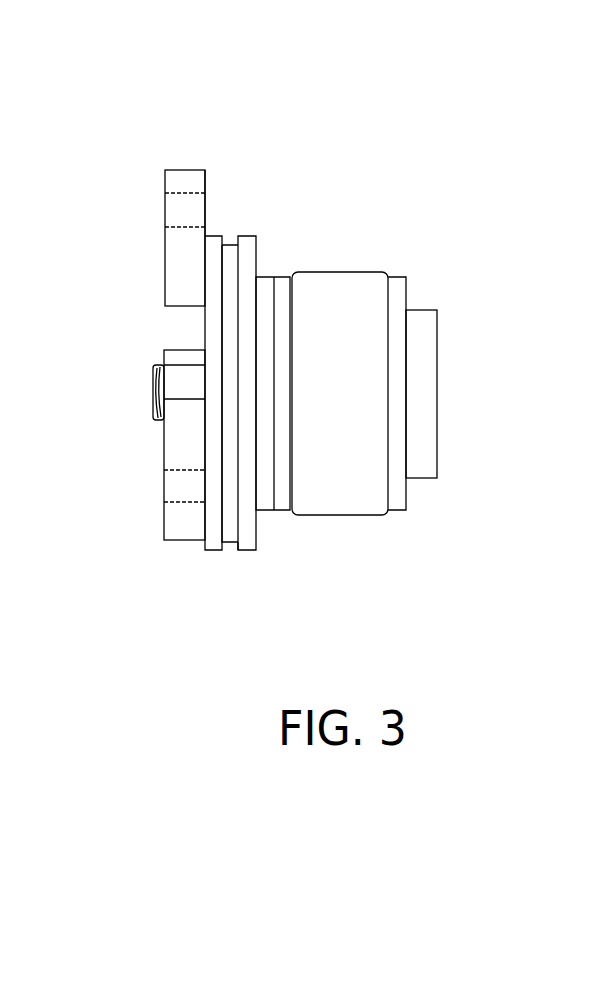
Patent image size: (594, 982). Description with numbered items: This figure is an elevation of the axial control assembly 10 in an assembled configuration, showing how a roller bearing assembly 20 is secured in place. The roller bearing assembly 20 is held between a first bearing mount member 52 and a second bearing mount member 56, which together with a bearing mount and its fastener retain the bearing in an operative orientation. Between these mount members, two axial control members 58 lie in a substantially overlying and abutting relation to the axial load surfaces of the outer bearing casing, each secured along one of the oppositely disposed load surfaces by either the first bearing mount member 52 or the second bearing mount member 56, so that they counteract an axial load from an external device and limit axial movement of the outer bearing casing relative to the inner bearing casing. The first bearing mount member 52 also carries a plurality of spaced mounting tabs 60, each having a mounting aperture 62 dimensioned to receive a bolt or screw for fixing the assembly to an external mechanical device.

The axial control assembly 10 is at (336, 162).
The roller bearing assembly 20 is at (348, 552).
The first bearing mount member 52 is at (248, 550).
The second bearing mount member 56 is at (437, 435).
The axial control members 58 is at (283, 277).
The mounting tabs 60 is at (185, 170).
The mounting aperture 62 is at (182, 208).